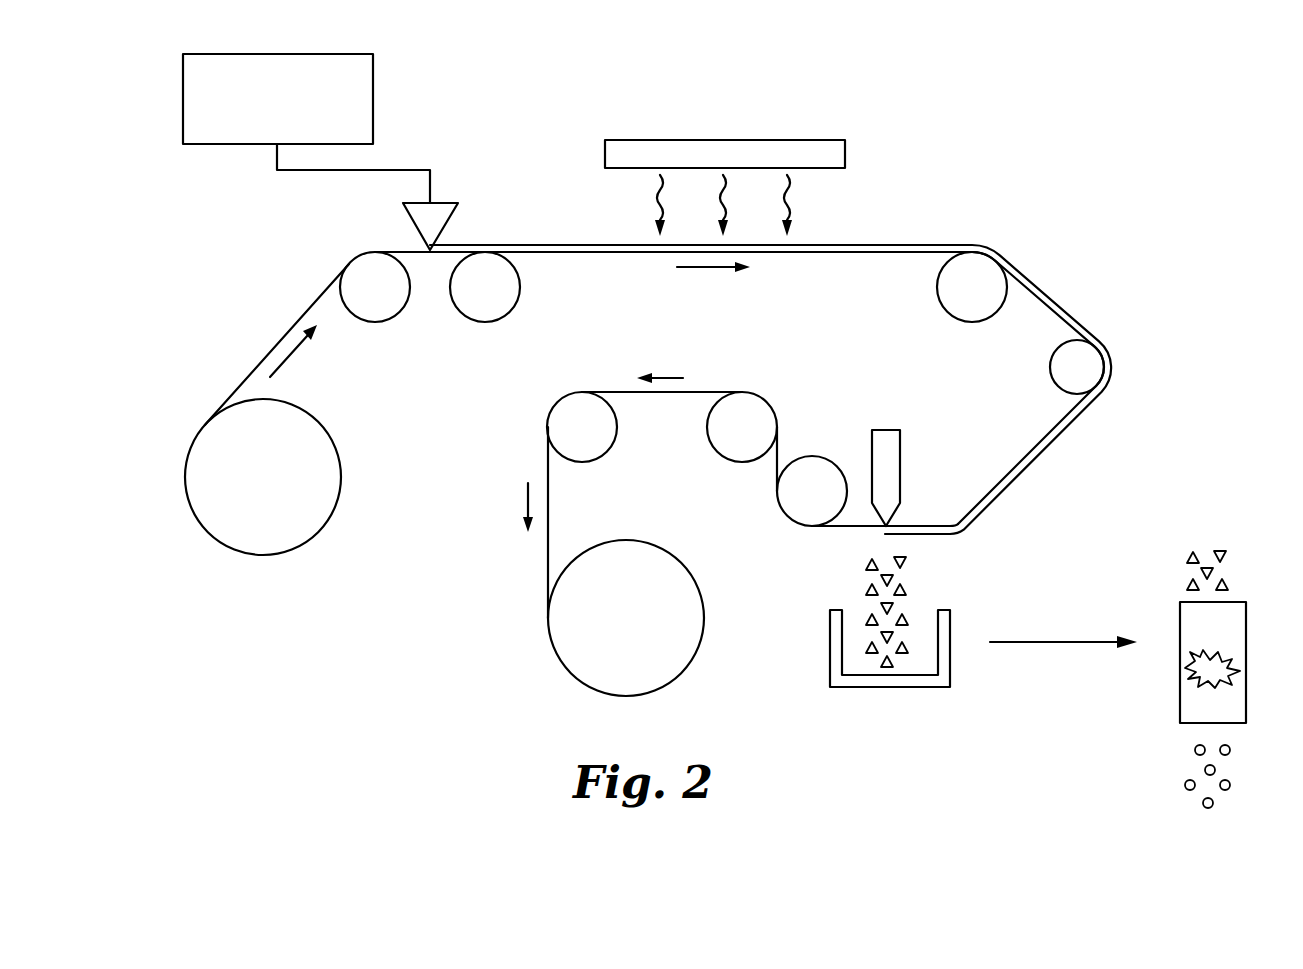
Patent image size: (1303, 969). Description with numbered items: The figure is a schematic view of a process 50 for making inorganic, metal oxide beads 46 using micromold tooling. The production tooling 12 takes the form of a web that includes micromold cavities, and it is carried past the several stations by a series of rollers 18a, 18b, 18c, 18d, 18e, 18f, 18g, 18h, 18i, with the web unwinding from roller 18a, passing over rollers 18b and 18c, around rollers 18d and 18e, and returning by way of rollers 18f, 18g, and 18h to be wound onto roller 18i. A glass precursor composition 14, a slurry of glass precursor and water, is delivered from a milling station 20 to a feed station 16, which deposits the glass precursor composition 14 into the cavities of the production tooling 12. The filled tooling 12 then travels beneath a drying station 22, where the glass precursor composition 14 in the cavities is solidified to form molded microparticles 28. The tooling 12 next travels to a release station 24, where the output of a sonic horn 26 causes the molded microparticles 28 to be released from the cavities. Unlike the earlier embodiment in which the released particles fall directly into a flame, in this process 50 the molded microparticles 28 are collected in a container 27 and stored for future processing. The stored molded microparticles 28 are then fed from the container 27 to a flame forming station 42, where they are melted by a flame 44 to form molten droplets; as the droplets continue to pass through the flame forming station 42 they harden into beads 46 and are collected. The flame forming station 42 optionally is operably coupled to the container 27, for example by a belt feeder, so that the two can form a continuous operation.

The production tooling 12 is at (272, 350).
The glass precursor composition 14 is at (530, 245).
The feed station 16 is at (445, 213).
The roller 18a is at (310, 523).
The roller 18b is at (376, 310).
The roller 18c is at (498, 303).
The roller 18d is at (966, 306).
The roller 18e is at (1066, 371).
The roller 18f is at (796, 514).
The roller 18g is at (749, 405).
The roller 18h is at (566, 408).
The roller 18i is at (657, 675).
The milling station 20 is at (365, 86).
The drying station 22 is at (818, 145).
The release station 24 is at (923, 492).
The sonic horn 26 is at (885, 440).
The container 27 is at (830, 645).
The molded microparticles 28 is at (904, 589).
The flame forming station 42 is at (1236, 636).
The flame 44 is at (1240, 668).
The beads 46 is at (1230, 750).
The process 50 is at (962, 98).